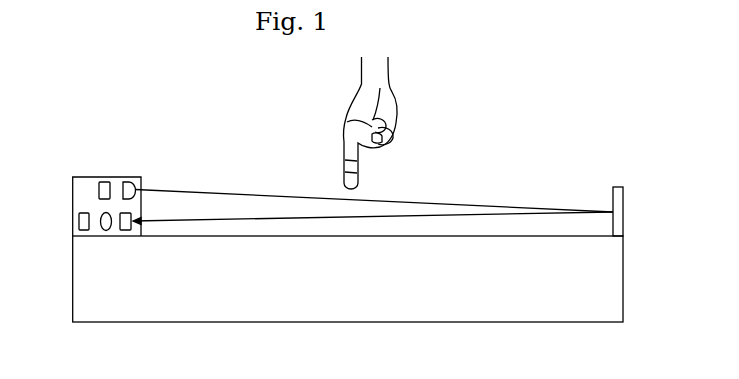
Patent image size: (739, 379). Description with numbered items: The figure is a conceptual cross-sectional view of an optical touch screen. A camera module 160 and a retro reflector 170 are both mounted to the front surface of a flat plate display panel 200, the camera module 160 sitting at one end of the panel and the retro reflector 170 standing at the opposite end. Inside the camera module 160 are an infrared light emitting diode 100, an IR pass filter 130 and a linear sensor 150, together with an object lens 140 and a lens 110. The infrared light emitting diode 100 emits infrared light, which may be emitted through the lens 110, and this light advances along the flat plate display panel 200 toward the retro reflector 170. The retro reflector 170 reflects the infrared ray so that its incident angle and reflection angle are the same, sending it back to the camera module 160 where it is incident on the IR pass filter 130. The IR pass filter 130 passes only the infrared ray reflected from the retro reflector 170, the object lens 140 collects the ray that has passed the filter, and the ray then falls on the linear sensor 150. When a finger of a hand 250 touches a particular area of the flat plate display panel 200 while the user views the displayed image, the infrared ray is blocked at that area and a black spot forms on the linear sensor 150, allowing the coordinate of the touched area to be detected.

The infrared light emitting diode 100 is at (104, 182).
The lens 110 is at (130, 182).
The IR pass filter 130 is at (125, 231).
The object lens 140 is at (106, 231).
The linear sensor 150 is at (73, 218).
The camera module 160 is at (73, 184).
The retro reflector 170 is at (619, 187).
The flat plate display panel 200 is at (378, 311).
The hand 250 is at (396, 102).